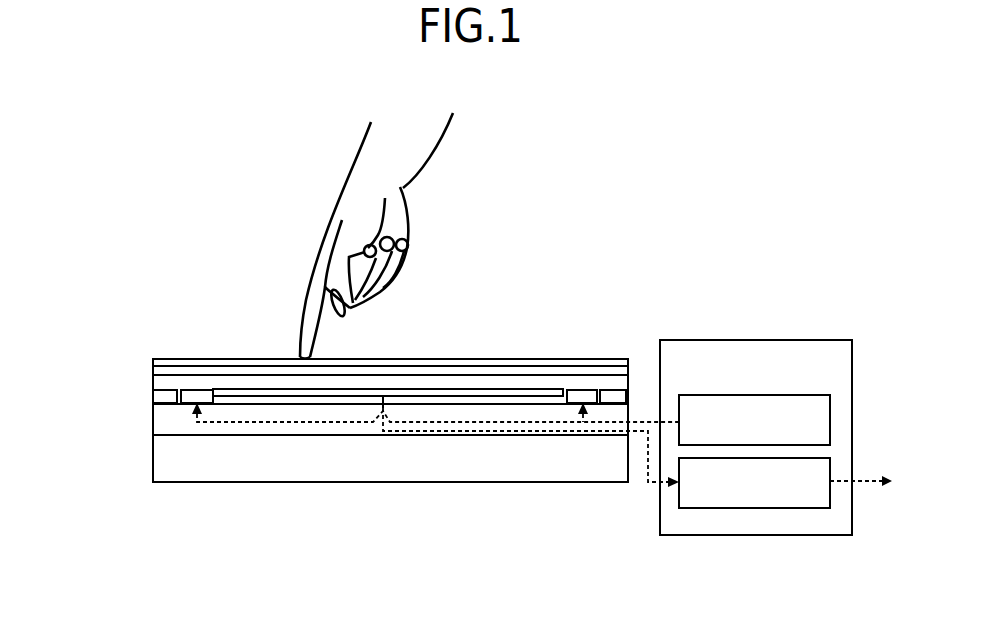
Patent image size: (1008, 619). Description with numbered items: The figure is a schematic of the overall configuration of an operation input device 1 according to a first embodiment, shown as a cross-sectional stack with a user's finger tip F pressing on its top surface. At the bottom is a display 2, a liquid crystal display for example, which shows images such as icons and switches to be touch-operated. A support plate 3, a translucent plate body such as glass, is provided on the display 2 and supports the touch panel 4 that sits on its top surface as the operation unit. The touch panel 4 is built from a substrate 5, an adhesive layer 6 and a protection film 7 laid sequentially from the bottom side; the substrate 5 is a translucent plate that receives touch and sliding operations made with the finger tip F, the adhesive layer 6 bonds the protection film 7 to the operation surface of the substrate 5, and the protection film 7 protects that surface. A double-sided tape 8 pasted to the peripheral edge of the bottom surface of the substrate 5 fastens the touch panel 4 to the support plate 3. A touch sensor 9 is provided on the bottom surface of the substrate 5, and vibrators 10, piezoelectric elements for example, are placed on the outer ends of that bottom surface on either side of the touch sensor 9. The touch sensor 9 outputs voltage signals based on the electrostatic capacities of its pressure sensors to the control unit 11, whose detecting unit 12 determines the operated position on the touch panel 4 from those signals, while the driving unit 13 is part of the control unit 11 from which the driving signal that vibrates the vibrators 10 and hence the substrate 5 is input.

The operation input device 1 is at (523, 216).
The display 2 is at (153, 468).
The support plate 3 is at (153, 426).
The touch panel 4 is at (73, 331).
The substrate 5 is at (153, 383).
The adhesive layer 6 is at (153, 368).
The protection film 7 is at (153, 361).
The double-sided tape 8 is at (167, 393).
The touch sensor 9 is at (437, 395).
The vibrators 10 is at (197, 397).
The control unit 11 is at (740, 340).
The detecting unit 12 is at (802, 508).
The driving unit 13 is at (813, 395).
The finger tip F is at (298, 357).